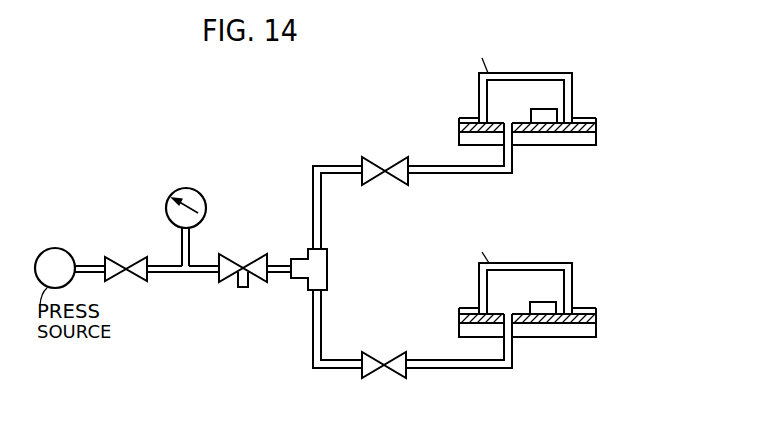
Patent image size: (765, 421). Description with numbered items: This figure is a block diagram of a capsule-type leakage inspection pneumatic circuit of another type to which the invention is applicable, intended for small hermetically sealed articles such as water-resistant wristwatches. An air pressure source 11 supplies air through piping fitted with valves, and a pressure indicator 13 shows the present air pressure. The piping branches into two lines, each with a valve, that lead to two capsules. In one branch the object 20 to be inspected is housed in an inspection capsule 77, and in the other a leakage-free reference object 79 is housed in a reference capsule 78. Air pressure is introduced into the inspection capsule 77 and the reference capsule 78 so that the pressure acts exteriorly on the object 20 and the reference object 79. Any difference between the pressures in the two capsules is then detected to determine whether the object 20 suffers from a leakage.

The air pressure source 11 is at (45, 248).
The pressure indicator 13 is at (174, 188).
The inspection capsule 77 is at (543, 73).
The object 20 is at (545, 110).
The reference capsule 78 is at (533, 263).
The reference object 79 is at (543, 302).